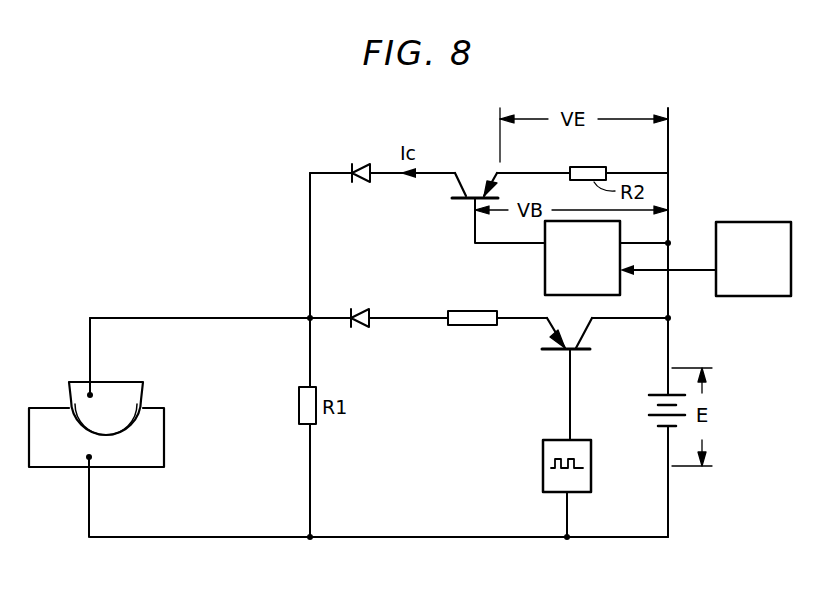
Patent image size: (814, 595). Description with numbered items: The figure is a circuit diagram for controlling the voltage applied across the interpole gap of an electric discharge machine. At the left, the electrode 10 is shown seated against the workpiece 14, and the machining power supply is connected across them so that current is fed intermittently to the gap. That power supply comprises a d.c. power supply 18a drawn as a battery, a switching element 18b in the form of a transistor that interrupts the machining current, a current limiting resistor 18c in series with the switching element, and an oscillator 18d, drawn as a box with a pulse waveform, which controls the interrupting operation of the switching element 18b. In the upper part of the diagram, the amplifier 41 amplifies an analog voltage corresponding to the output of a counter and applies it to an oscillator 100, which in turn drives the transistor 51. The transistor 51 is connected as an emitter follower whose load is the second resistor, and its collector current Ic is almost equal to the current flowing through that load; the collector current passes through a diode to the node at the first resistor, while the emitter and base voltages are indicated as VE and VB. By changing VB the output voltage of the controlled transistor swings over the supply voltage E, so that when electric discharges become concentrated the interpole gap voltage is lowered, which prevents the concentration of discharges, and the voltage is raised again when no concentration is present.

The electrode 10 is at (118, 390).
The workpiece 14 is at (164, 440).
The transistor 51 is at (480, 193).
The oscillator 100 is at (545, 276).
The amplifier 41 is at (740, 222).
The d.c. power supply 18a is at (650, 416).
The switching element 18b is at (562, 353).
The current limiting resistor 18c is at (478, 327).
The oscillator 18d is at (591, 446).